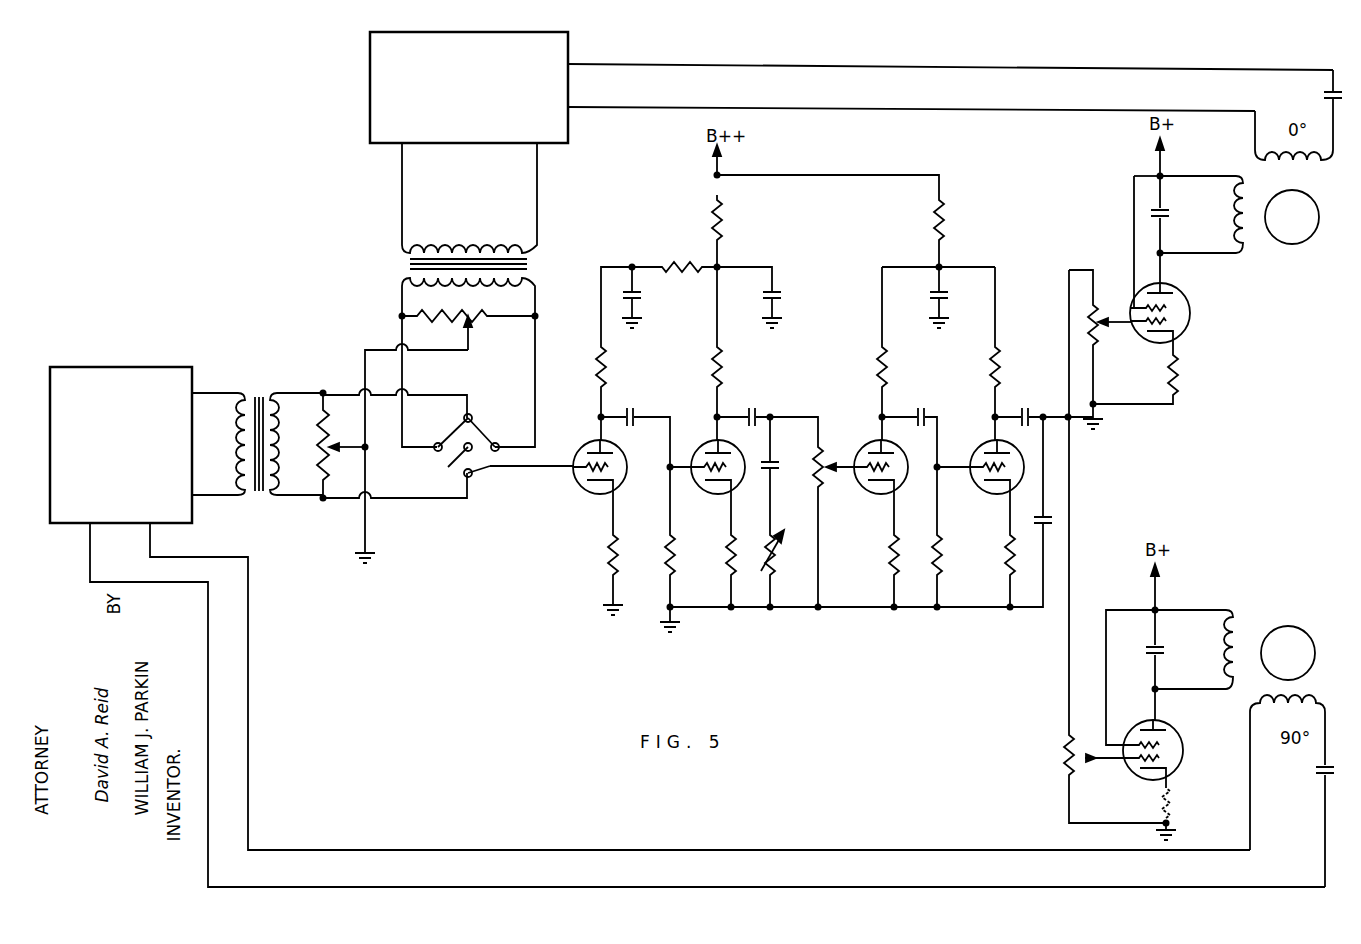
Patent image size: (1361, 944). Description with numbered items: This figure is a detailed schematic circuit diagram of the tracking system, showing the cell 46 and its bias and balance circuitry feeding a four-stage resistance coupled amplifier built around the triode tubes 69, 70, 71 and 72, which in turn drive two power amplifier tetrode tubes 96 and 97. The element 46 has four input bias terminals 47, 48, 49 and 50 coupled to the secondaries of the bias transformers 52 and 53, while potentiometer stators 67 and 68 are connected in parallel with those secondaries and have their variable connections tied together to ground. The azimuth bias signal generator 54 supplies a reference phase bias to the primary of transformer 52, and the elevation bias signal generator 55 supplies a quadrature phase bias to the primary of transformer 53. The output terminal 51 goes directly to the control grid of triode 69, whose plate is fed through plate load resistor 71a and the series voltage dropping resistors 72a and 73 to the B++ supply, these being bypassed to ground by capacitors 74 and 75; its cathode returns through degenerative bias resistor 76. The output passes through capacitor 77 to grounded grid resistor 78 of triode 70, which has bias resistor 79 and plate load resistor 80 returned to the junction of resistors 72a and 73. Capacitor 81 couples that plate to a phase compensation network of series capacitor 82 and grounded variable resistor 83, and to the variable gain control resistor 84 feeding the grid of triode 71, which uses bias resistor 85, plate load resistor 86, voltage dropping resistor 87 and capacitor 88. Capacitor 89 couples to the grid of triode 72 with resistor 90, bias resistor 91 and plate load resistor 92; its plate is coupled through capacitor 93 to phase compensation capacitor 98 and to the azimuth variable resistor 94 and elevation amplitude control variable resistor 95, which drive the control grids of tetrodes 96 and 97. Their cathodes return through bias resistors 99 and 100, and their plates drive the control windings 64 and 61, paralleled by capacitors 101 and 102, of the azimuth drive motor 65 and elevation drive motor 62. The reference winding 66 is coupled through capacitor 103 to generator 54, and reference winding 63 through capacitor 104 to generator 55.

The cell 46 is at (482, 432).
The input bias terminal 47 is at (472, 413).
The input bias terminal 48 is at (500, 451).
The input bias terminal 49 is at (472, 478).
The input bias terminal 50 is at (434, 450).
The output terminal 51 is at (458, 462).
The bias transformer 52 is at (528, 263).
The bias transformer 53 is at (258, 393).
The azimuth bias signal generator 54 is at (568, 128).
The elevation bias signal generator 55 is at (165, 372).
The control winding 61 is at (1232, 610).
The elevation drive motor 62 is at (1315, 653).
The reference winding 63 is at (1312, 705).
The control winding 64 is at (1238, 256).
The azimuth drive motor 65 is at (1319, 217).
The reference winding 66 is at (1255, 142).
The potentiometer stator 67 is at (428, 305).
The potentiometer stator 68 is at (322, 460).
The triode tube 69 is at (584, 443).
The triode tube 70 is at (732, 458).
The triode tube 71 is at (868, 450).
The plate load resistor 71a is at (606, 368).
The triode tube 72 is at (988, 454).
The voltage dropping resistor 72a is at (668, 259).
The voltage dropping resistor 73 is at (724, 228).
The capacitor 74 is at (642, 293).
The capacitor 75 is at (782, 292).
The degenerative bias resistor 76 is at (618, 560).
The capacitor 77 is at (632, 408).
The grid resistor 78 is at (674, 568).
The bias resistor 79 is at (736, 552).
The plate load resistor 80 is at (725, 373).
The capacitor 81 is at (757, 410).
The capacitor 82 is at (774, 450).
The variable resistor 83 is at (777, 562).
The variable resistor 84 is at (822, 490).
The bias resistor 85 is at (898, 565).
The plate load resistor 86 is at (886, 375).
The voltage dropping resistor 87 is at (943, 226).
The capacitor 88 is at (949, 297).
The capacitor 89 is at (918, 410).
The resistor 90 is at (941, 568).
The bias resistor 91 is at (1003, 576).
The plate load resistor 92 is at (1000, 375).
The capacitor 93 is at (1029, 410).
The azimuth variable resistor 94 is at (1097, 345).
The elevation amplitude control variable resistor 95 is at (1060, 745).
The power amplifier tetrode tube 96 is at (1190, 318).
The power amplifier tetrode tube 97 is at (1182, 748).
The phase compensation capacitor 98 is at (1052, 516).
The bias resistor 99 is at (1178, 382).
The bias resistor 100 is at (1192, 802).
The capacitor 101 is at (1163, 213).
The capacitor 102 is at (1158, 650).
The capacitor 103 is at (1328, 97).
The capacitor 104 is at (1316, 777).